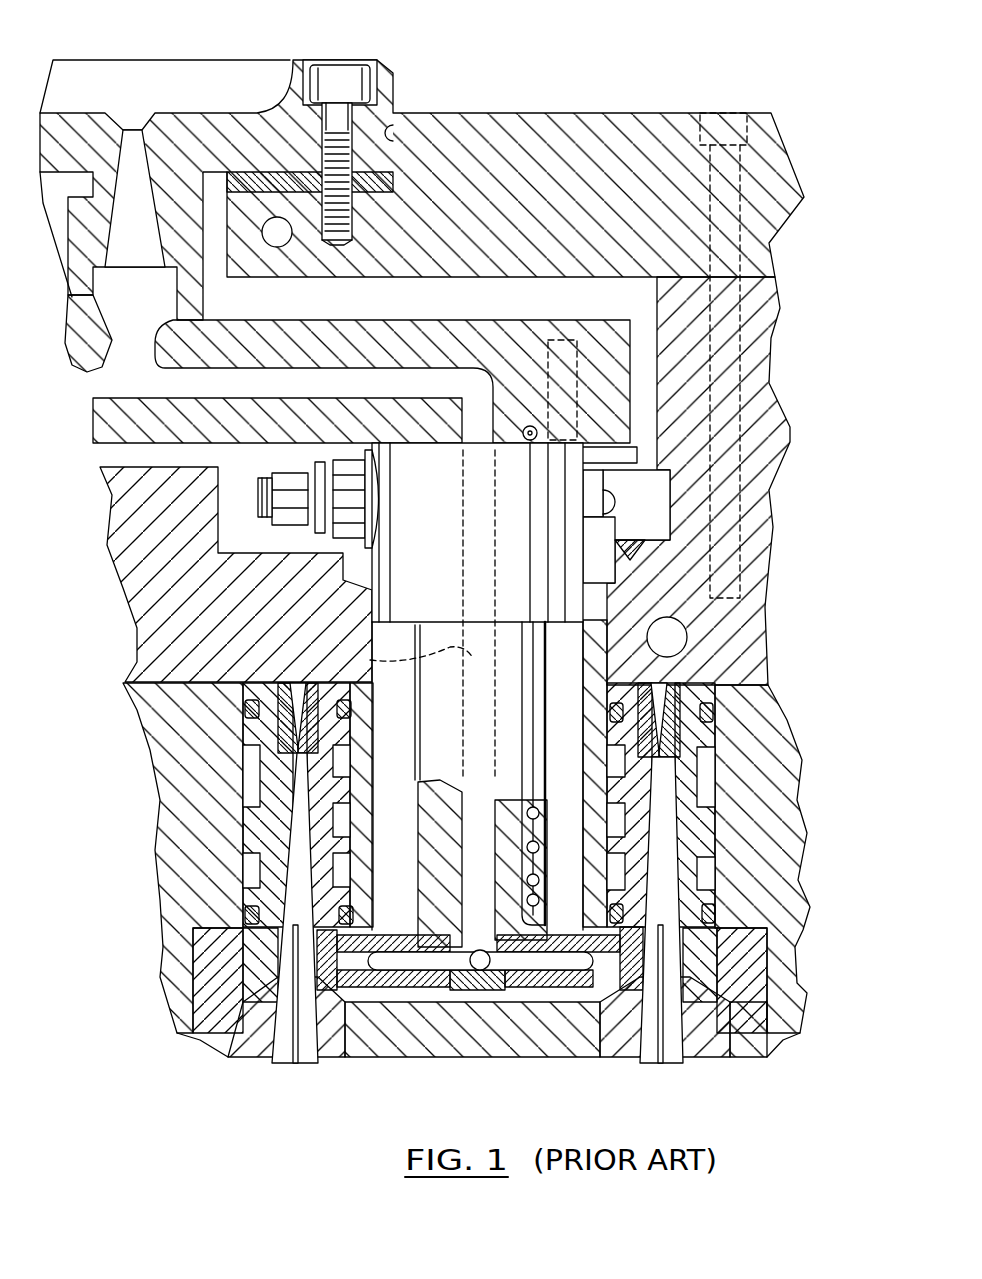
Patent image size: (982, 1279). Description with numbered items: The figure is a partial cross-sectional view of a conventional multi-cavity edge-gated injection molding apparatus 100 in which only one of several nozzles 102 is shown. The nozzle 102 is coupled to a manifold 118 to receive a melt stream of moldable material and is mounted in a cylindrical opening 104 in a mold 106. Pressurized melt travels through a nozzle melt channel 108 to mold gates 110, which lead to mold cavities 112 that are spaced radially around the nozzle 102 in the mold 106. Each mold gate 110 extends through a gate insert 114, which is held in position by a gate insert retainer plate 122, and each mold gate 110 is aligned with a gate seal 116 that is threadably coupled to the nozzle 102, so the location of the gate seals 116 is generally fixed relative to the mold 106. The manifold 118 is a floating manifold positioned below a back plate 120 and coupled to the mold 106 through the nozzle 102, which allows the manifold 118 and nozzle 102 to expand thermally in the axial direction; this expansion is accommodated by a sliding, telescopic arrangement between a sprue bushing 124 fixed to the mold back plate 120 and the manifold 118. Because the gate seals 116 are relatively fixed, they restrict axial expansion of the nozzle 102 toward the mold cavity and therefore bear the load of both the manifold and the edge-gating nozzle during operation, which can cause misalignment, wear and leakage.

The multi-cavity edge-gated injection molding apparatus 100 is at (455, 587).
The nozzle 102 is at (385, 845).
The cylindrical opening 104 is at (572, 652).
The mold 106 is at (175, 765).
The nozzle melt channel 108 is at (370, 658).
The mold gate 110 is at (300, 1063).
The mold cavity 112 is at (287, 910).
The gate insert 114 is at (252, 947).
The gate seal 116 is at (393, 985).
The manifold 118 is at (612, 373).
The back plate 120 is at (612, 138).
The gate insert retainer plate 122 is at (212, 1020).
The sprue bushing 124 is at (88, 135).